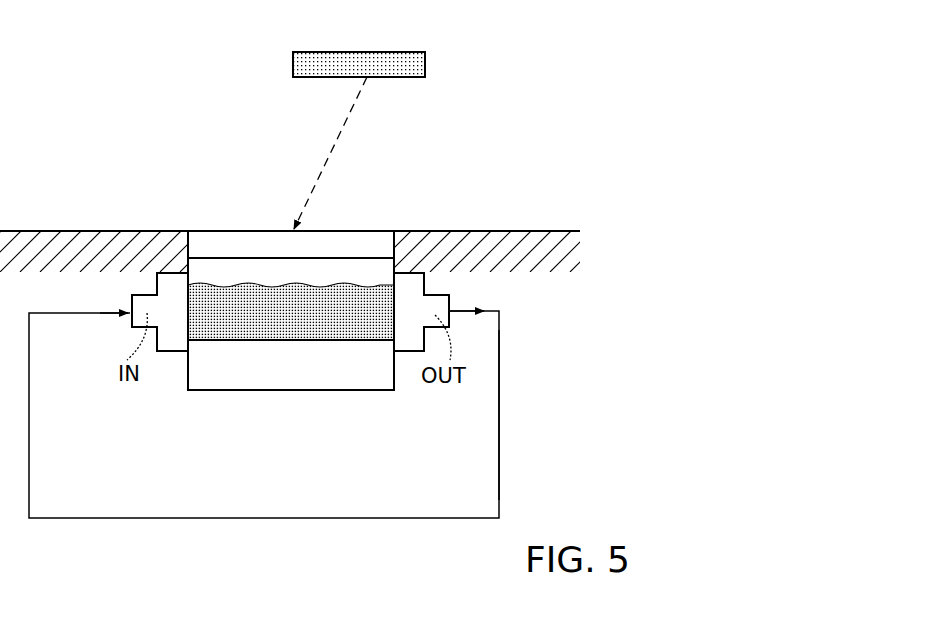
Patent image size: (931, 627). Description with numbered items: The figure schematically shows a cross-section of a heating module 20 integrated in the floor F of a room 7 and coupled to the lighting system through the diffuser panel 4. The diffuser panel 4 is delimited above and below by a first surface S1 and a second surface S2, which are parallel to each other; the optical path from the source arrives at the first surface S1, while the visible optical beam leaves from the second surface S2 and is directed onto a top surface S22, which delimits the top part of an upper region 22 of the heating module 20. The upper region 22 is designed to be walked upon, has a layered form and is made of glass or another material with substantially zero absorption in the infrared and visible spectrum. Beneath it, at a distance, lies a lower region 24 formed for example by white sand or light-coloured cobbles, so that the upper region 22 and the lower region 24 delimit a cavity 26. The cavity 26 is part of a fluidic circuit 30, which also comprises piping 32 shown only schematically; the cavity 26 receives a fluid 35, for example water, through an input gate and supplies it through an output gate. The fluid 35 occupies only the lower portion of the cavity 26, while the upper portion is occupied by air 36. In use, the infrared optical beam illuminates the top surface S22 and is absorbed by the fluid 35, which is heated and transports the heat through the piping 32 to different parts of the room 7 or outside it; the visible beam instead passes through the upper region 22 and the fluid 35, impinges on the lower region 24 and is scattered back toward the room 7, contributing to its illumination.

The diffuser panel 4 is at (400, 62).
The first surface S1 is at (313, 50).
The second surface S2 is at (410, 80).
The top surface S22 is at (375, 228).
The room 7 is at (108, 152).
The floor F is at (135, 243).
The upper region 22 is at (350, 247).
The air 36 is at (262, 275).
The cavity 26 is at (231, 275).
The fluid 35 is at (248, 320).
The lower region 24 is at (337, 370).
The heating module 20 is at (171, 369).
The fluidic circuit 30 is at (519, 434).
The piping 32 is at (502, 347).